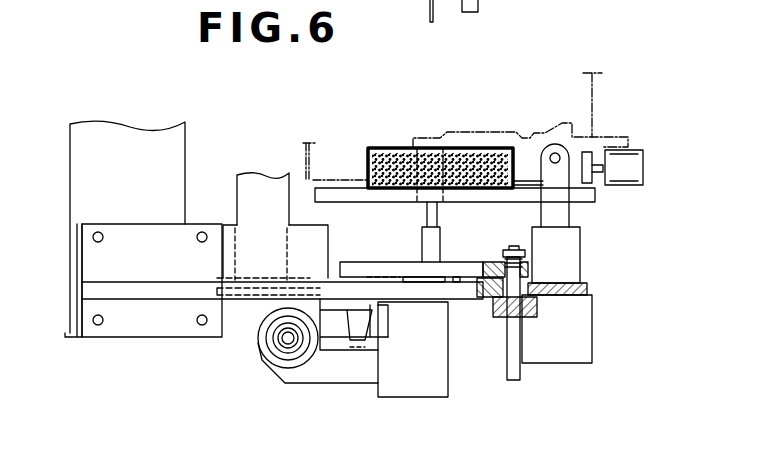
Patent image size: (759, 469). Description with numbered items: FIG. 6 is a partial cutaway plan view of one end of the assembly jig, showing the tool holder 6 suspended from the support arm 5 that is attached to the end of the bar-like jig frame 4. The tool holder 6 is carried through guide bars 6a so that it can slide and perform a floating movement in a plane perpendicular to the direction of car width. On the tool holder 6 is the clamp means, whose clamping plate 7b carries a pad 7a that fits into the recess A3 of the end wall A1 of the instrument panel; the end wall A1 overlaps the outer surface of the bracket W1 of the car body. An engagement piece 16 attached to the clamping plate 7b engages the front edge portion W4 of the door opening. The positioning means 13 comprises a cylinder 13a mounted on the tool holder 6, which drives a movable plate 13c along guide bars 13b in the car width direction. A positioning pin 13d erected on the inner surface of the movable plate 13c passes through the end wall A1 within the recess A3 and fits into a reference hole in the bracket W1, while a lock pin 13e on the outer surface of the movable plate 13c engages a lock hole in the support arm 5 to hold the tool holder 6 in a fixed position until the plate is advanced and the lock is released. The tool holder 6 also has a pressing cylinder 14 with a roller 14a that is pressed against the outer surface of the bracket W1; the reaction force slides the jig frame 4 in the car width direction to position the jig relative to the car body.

The jig frame 4 is at (74, 172).
The support arm 5 is at (157, 298).
The tool holder 6 is at (473, 299).
The guide bar 6a is at (287, 348).
The pad 7a is at (390, 157).
The clamping plate 7b is at (514, 202).
The positioning means 13 is at (472, 250).
The cylinder 13a is at (446, 378).
The guide bar 13b is at (523, 374).
The movable plate 13c is at (352, 270).
The positioning pin 13d is at (425, 240).
The lock pin 13e is at (350, 330).
The pressing cylinder 14 is at (587, 340).
The roller 14a is at (556, 145).
The engagement piece 16 is at (595, 184).
The bracket W1 is at (505, 135).
The front edge portion of the door opening W4 is at (590, 150).
The end wall A1 is at (300, 148).
The recess A3 is at (442, 150).